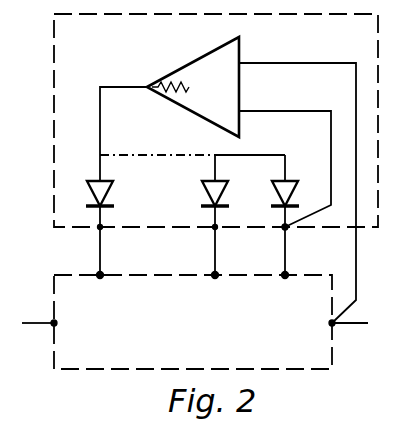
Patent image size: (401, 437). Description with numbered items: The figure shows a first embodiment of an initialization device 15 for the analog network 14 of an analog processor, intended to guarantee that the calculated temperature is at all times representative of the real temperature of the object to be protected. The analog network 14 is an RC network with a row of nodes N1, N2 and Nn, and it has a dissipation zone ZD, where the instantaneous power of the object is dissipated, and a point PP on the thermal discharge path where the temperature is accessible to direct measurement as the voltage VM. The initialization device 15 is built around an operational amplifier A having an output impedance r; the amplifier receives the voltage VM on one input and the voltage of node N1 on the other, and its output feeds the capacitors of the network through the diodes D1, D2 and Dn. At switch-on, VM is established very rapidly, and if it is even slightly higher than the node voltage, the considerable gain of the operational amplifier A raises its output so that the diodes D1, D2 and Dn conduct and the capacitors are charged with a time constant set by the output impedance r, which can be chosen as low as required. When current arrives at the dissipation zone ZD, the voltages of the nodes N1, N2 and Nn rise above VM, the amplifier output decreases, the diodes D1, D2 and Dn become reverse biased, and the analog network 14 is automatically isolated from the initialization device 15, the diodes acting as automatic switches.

The initialization device 15 is at (87, 54).
The analog network 14 is at (100, 360).
The operational amplifier A is at (202, 87).
The output impedance r is at (164, 97).
The diode Dn is at (113, 215).
The diode D2 is at (228, 215).
The diode D1 is at (298, 215).
The node Nn is at (101, 294).
The node N2 is at (216, 294).
The node N1 is at (289, 294).
The dissipation zone ZD is at (39, 339).
The point PP is at (348, 339).